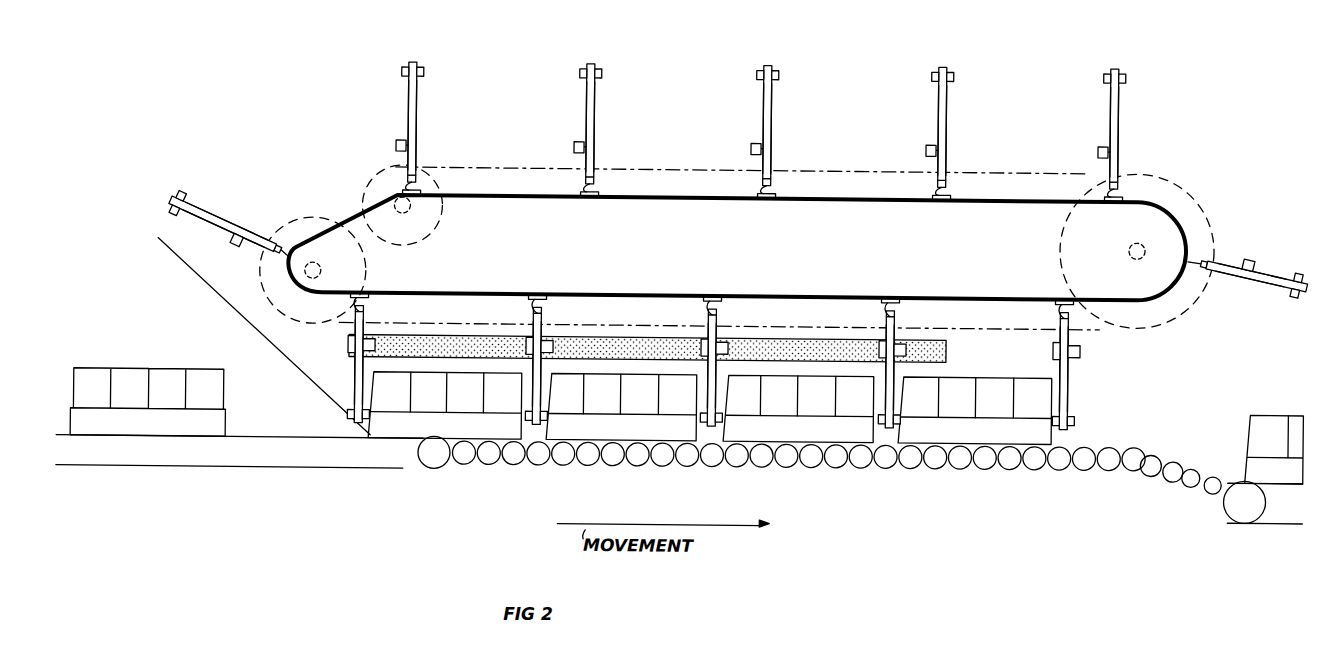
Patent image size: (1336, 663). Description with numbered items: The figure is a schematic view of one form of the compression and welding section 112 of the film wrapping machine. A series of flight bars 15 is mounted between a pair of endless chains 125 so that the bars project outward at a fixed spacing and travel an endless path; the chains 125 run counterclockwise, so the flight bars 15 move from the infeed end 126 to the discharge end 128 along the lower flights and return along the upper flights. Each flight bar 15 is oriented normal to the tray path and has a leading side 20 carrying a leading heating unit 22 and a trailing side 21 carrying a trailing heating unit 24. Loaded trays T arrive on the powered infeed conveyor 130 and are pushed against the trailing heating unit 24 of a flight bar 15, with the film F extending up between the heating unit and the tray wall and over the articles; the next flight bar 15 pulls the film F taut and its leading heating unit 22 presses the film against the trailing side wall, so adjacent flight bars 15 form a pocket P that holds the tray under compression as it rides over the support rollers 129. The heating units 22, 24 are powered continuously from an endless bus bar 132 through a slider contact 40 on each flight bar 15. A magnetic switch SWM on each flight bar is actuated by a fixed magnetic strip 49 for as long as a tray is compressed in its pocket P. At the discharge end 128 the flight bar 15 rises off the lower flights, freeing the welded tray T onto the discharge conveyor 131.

The compression and welding section 112 is at (830, 45).
The endless chains 125 is at (722, 172).
The endless bus bar 132 is at (683, 198).
The flight bar 15 is at (412, 63).
The leading side 20 is at (407, 112).
The trailing side 21 is at (415, 112).
The leading heating unit 22 is at (400, 72).
The trailing heating unit 24 is at (423, 73).
The switch SWM is at (395, 142).
The slider contact 40 is at (419, 192).
The magnetic strip 49 is at (640, 345).
The pocket P is at (444, 357).
The film F is at (290, 366).
The tray T is at (218, 430).
The infeed end 126 is at (234, 323).
The discharge end 128 is at (1194, 354).
The support rollers 129 is at (482, 462).
The infeed conveyor 130 is at (255, 470).
The discharge conveyor 131 is at (1270, 518).